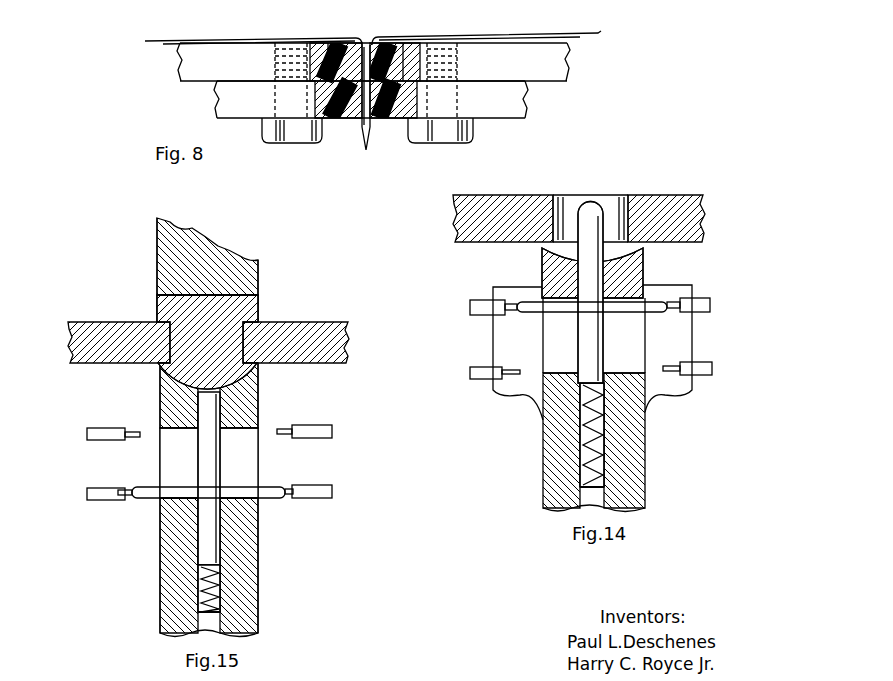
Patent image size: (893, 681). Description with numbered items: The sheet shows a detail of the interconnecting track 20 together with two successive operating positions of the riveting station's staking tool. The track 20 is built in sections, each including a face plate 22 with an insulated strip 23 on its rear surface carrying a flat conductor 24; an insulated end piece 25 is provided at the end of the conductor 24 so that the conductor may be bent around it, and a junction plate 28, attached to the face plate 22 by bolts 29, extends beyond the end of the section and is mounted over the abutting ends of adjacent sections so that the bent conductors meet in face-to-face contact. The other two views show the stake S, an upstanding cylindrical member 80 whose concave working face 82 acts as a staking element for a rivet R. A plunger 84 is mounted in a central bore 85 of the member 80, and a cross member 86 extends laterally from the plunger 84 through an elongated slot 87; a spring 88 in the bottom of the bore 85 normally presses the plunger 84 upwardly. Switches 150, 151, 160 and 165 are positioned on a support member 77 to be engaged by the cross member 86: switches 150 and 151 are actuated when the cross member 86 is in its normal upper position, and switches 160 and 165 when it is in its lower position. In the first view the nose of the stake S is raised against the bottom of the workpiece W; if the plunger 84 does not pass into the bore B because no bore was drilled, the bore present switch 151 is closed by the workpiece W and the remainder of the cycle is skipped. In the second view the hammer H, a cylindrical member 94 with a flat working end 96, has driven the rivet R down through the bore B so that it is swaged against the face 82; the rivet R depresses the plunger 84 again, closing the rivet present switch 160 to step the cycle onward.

In FIG. 8, the track 20 is at (548, 103).
In FIG. 8, the face plate 22 is at (568, 68).
In FIG. 8, the insulated strip 23 is at (578, 38).
In FIG. 8, the flat conductor 24 is at (204, 38).
In FIG. 8, the insulated end piece 25 is at (337, 117).
In FIG. 8, the junction plate 28 is at (495, 119).
In FIG. 8, the bolt 29 is at (460, 141).
In FIG. 14, the support member 77 is at (688, 340).
In FIG. 15, the cylindrical member 80 is at (254, 542).
In FIG. 14, the working face 82 is at (553, 243).
In FIG. 15, the plunger 84 is at (213, 452).
In FIG. 14, the plunger 84 is at (592, 214).
In FIG. 15, the central bore 85 is at (224, 582).
In FIG. 14, the central bore 85 is at (603, 458).
In FIG. 15, the cross member 86 is at (262, 488).
In FIG. 14, the cross member 86 is at (537, 308).
In FIG. 15, the elongated slot 87 is at (168, 470).
In FIG. 14, the elongated slot 87 is at (633, 339).
In FIG. 15, the spring 88 is at (203, 588).
In FIG. 14, the spring 88 is at (604, 474).
In FIG. 15, the cylindrical member 94 is at (230, 262).
In FIG. 15, the flat working end 96 is at (162, 288).
In FIG. 15, the switch 150 is at (317, 430).
In FIG. 14, the switch 150 is at (693, 300).
In FIG. 15, the bore present switch 151 is at (100, 435).
In FIG. 14, the bore present switch 151 is at (477, 305).
In FIG. 15, the rivet present switch 160 is at (323, 496).
In FIG. 14, the rivet present switch 160 is at (690, 374).
In FIG. 15, the switch 165 is at (102, 492).
In FIG. 14, the switch 165 is at (478, 368).
In FIG. 15, the hammer H is at (148, 237).
In FIG. 15, the rivet R is at (252, 291).
In FIG. 15, the workpiece W is at (308, 328).
In FIG. 14, the workpiece W is at (455, 213).
In FIG. 14, the bore B is at (607, 200).
In FIG. 15, the stake S is at (138, 562).
In FIG. 14, the stake S is at (538, 437).